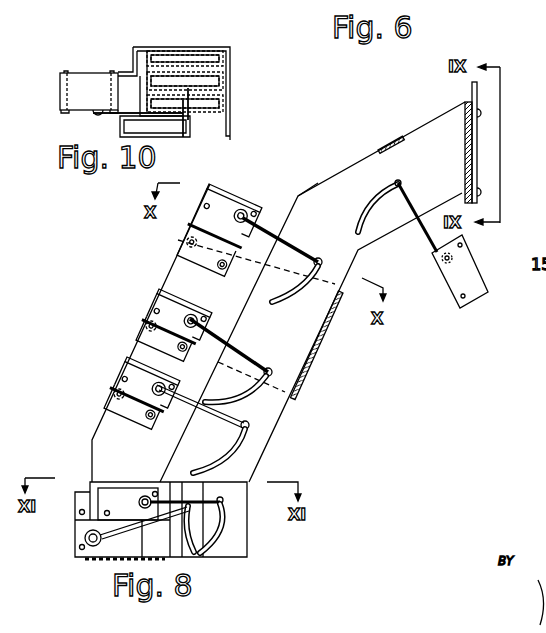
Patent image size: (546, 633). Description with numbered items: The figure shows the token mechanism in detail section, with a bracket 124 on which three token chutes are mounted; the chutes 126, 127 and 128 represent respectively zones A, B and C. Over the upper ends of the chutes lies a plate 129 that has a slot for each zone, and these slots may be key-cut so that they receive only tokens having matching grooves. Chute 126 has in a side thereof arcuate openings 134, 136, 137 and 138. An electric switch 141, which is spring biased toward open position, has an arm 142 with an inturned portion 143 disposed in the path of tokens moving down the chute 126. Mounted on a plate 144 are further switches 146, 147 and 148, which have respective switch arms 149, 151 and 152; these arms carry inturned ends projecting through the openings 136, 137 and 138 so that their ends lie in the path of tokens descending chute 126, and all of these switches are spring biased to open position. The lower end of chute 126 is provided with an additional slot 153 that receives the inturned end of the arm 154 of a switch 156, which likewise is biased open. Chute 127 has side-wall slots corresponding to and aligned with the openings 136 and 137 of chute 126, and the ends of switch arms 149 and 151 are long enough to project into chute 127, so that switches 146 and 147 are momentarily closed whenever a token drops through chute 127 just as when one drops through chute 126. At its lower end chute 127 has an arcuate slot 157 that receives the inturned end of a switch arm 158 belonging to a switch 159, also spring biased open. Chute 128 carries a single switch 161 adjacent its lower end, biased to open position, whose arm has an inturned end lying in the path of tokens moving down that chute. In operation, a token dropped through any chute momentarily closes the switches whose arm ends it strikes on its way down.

In FIG. 10, the bracket 124 is at (133, 47).
In FIG. 10, the token chute 126 is at (212, 113).
In FIG. 8, the token chute 126 is at (320, 186).
In FIG. 10, the token chute 127 is at (232, 64).
In FIG. 10, the token chute 128 is at (210, 52).
In FIG. 10, the zone A is at (222, 102).
In FIG. 10, the zone B is at (212, 80).
In FIG. 10, the zone C is at (190, 62).
In FIG. 8, the plate 129 is at (477, 170).
In FIG. 8, the arcuate opening 134 is at (378, 198).
In FIG. 8, the arcuate opening 136 is at (285, 297).
In FIG. 8, the arcuate opening 137 is at (244, 397).
In FIG. 8, the arcuate opening 138 is at (238, 447).
In FIG. 8, the electric switch 141 is at (477, 286).
In FIG. 8, the arm 142 is at (423, 228).
In FIG. 8, the inturned portion 143 is at (398, 180).
In FIG. 8, the plate 144 is at (98, 428).
In FIG. 10, the switch 146 is at (72, 96).
In FIG. 8, the switch 146 is at (216, 196).
In FIG. 8, the switch 147 is at (158, 292).
In FIG. 8, the switch 148 is at (127, 359).
In FIG. 10, the switch arm 149 is at (112, 117).
In FIG. 8, the switch arm 149 is at (270, 225).
In FIG. 10, the switch arm 151 is at (186, 130).
In FIG. 8, the switch arm 151 is at (246, 352).
In FIG. 10, the switch arm 152 is at (190, 126).
In FIG. 8, the switch arm 152 is at (222, 427).
In FIG. 8, the slot 153 is at (220, 532).
In FIG. 8, the arm 154 is at (225, 500).
In FIG. 8, the switch 156 is at (88, 502).
In FIG. 8, the arcuate slot 157 is at (205, 553).
In FIG. 8, the switch arm 158 is at (96, 559).
In FIG. 8, the switch 159 is at (78, 539).
In FIG. 8, the switch 161 is at (80, 486).